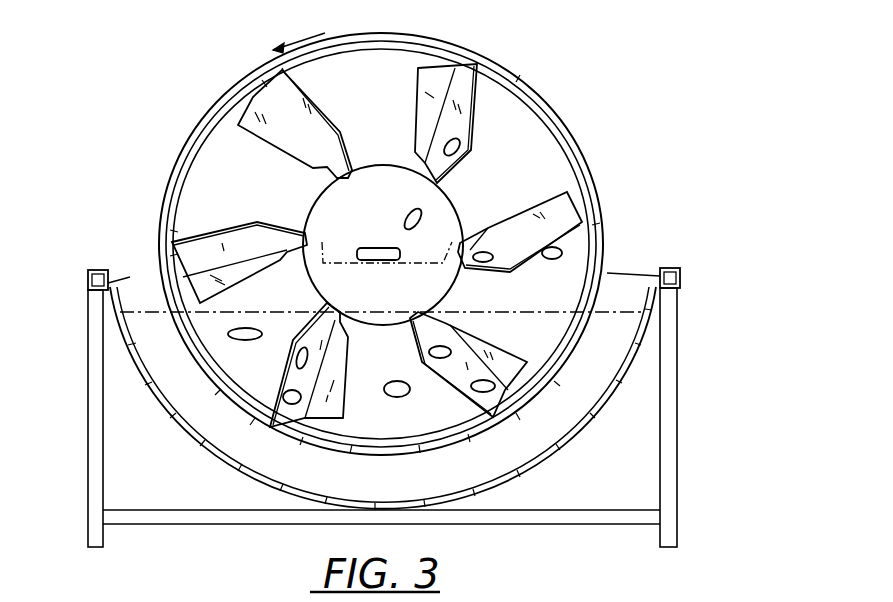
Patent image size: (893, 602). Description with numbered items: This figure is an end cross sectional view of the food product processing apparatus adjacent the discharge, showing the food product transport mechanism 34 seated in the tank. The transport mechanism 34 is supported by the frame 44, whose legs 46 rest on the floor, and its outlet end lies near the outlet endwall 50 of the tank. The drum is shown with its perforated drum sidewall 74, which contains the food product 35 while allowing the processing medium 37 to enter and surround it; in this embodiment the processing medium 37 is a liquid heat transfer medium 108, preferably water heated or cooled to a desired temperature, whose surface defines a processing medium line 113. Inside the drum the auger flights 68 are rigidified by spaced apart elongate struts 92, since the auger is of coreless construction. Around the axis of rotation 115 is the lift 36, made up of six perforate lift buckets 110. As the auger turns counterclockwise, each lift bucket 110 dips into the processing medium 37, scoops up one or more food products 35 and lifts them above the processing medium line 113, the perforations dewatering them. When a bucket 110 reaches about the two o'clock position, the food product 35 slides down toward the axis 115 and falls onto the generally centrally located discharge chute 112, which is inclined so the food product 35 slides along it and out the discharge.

The food product transport mechanism 34 is at (528, 50).
The lift 36 is at (310, 88).
The elongate struts 92 is at (507, 70).
The flights 68 is at (218, 148).
The drum sidewall 74 is at (425, 210).
The discharge chute 112 is at (465, 222).
The axis of rotation 115 is at (380, 248).
The lift buckets 110 is at (468, 78).
The food product 35 is at (455, 143).
The heat transfer medium 108 is at (627, 330).
The outlet endwall 50 is at (123, 275).
The processing medium 37 is at (153, 293).
The processing medium line 113 is at (617, 303).
The frame 44 is at (688, 420).
The legs 46 is at (677, 460).